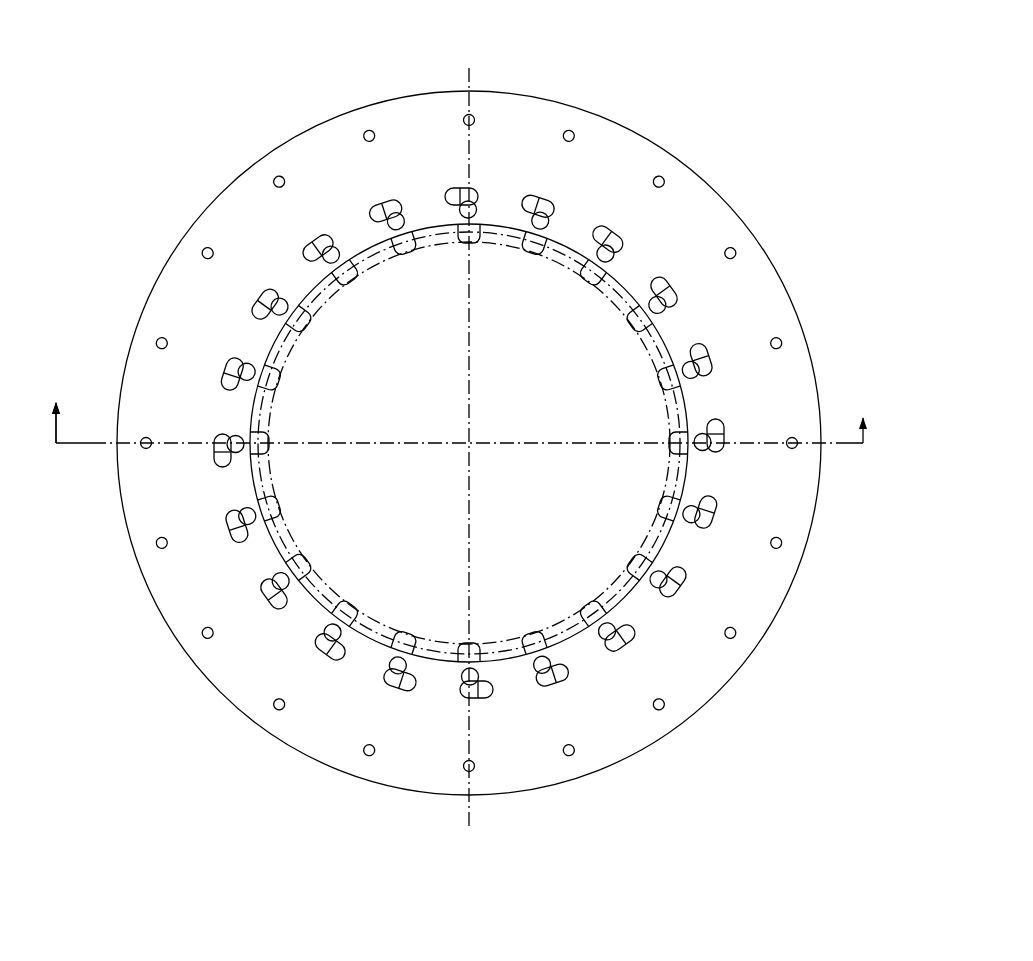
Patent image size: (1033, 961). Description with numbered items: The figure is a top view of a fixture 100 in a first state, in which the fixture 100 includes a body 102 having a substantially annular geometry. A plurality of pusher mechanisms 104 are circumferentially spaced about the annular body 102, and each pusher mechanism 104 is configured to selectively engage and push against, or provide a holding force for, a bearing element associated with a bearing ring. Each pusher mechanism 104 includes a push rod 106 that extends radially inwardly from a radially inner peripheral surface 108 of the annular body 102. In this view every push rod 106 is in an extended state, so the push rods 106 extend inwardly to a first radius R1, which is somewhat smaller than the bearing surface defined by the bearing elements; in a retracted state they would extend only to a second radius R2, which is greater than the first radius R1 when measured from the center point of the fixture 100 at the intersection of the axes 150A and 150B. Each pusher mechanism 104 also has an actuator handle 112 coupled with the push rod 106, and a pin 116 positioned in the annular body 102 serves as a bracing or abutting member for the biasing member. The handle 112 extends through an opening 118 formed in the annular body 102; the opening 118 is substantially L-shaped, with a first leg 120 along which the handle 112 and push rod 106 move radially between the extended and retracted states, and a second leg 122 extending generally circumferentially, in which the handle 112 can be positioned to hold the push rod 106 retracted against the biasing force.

The fixture 100 is at (723, 90).
The body 102 is at (712, 185).
The pusher mechanisms 104 is at (458, 457).
The push rod 106 is at (399, 246).
The radially inner peripheral surface 108 is at (668, 342).
The actuator handle 112 is at (403, 215).
The pin 116 is at (362, 130).
The opening 118 is at (387, 683).
The first leg 120 is at (385, 669).
The second leg 122 is at (405, 697).
The axis 150A is at (472, 80).
The axis 150B is at (523, 442).
The first radius R1 is at (469, 443).
The second radius R2 is at (469, 443).